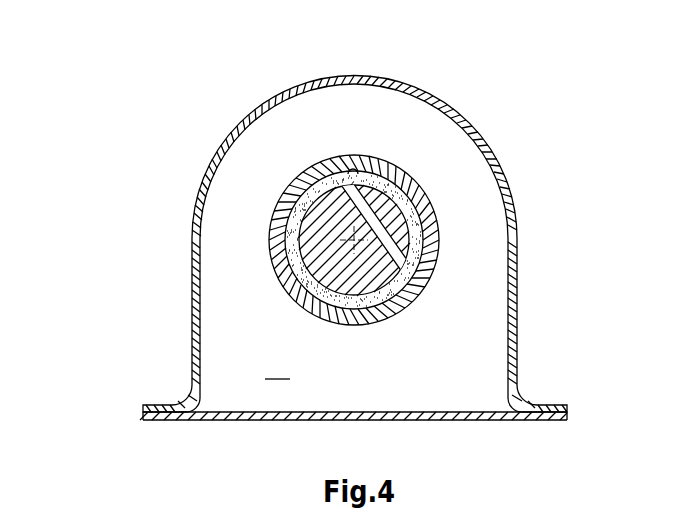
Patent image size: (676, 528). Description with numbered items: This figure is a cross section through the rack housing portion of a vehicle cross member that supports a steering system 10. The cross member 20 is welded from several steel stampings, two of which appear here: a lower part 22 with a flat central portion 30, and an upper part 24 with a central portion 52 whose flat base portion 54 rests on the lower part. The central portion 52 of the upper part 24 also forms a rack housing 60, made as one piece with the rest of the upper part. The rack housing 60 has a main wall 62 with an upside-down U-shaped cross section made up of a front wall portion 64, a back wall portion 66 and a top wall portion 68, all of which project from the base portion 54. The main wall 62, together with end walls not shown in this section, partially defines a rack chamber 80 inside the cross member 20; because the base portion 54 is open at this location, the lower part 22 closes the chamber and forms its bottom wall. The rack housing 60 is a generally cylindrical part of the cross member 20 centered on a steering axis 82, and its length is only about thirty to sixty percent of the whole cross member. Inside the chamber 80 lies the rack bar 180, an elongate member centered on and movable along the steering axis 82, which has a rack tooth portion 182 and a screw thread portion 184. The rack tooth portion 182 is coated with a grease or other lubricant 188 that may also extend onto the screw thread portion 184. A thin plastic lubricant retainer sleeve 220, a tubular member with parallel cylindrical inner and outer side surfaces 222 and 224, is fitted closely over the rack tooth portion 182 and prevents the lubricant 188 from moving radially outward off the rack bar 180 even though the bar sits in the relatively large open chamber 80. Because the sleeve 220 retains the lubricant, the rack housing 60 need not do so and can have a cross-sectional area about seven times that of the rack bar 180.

The steering system 10 is at (128, 342).
The cross member 20 is at (122, 418).
The lower part 22 is at (245, 424).
The central portion 30 is at (453, 423).
The upper part 24 is at (521, 333).
The central portion 52 is at (552, 405).
The base portion 54 is at (166, 404).
The rack housing 60 is at (189, 253).
The main wall 62 is at (193, 209).
The front wall portion 64 is at (518, 287).
The back wall portion 66 is at (193, 305).
The top wall portion 68 is at (368, 78).
The rack chamber 80 is at (277, 368).
The steering axis 82 is at (352, 242).
The rack bar 180 is at (379, 300).
The rack tooth portion 182 is at (412, 285).
The screw thread portion 184 is at (393, 247).
The lubricant 188 is at (418, 218).
The lubricant retainer sleeve 220 is at (397, 162).
The inner side surface 222 is at (351, 168).
The outer side surface 224 is at (303, 177).